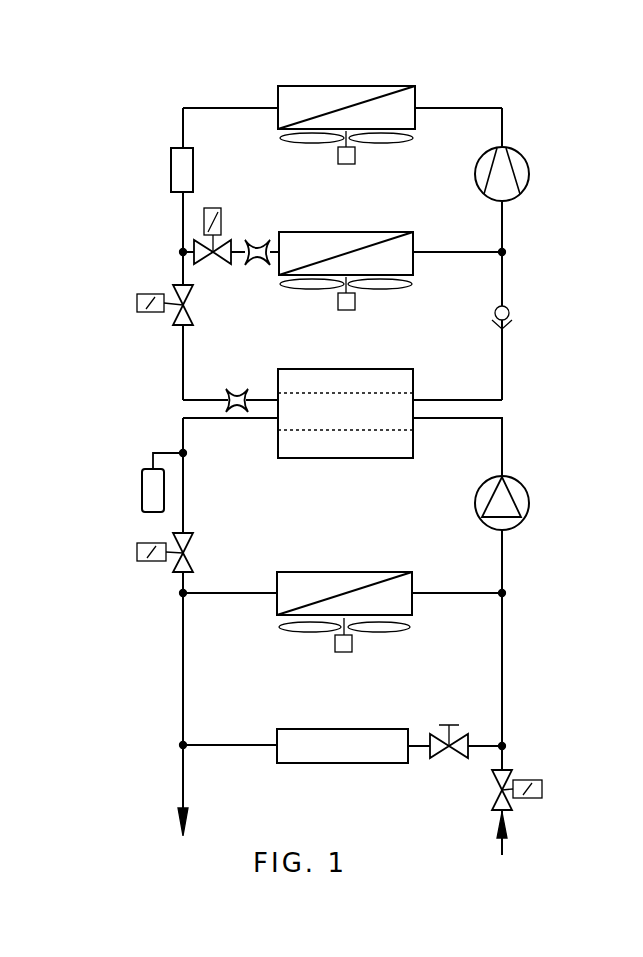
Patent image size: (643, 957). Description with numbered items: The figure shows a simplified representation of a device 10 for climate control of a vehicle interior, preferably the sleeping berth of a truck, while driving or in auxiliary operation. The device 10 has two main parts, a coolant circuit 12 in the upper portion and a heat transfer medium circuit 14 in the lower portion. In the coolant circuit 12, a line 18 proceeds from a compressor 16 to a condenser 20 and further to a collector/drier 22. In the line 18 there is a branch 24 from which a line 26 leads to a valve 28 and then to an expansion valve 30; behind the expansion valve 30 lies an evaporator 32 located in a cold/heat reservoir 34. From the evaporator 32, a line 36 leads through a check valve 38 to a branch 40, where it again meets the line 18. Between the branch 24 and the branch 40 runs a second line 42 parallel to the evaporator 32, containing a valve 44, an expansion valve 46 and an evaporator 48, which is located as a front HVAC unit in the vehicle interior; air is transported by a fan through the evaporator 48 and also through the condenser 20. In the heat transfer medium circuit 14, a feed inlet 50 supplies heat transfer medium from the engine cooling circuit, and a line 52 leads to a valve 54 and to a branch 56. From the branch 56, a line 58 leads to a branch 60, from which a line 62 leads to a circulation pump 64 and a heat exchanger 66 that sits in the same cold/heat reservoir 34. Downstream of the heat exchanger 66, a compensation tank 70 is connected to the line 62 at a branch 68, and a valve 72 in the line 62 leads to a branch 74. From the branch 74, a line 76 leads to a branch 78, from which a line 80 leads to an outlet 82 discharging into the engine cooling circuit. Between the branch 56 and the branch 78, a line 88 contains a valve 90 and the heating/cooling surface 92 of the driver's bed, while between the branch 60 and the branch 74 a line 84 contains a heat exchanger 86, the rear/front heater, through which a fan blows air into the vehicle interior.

The device 10 is at (171, 119).
The coolant circuit 12 is at (505, 234).
The heat transfer medium circuit 14 is at (503, 647).
The compressor 16 is at (522, 157).
The line 18 is at (464, 108).
The condenser 20 is at (370, 96).
The collector/drier 22 is at (178, 170).
The branch 24 is at (180, 252).
The line 26 is at (183, 362).
The valve 28 is at (162, 314).
The expansion valve 30 is at (240, 393).
The evaporator 32 is at (393, 392).
The cold/heat reservoir 34 is at (413, 384).
The line 36 is at (504, 360).
The check valve 38 is at (511, 310).
The branch 40 is at (506, 252).
The second line 42 is at (462, 254).
The valve 44 is at (196, 247).
The expansion valve 46 is at (257, 240).
The evaporator 48 is at (388, 242).
The feed inlet 50 is at (506, 837).
The line 52 is at (504, 772).
The valve 54 is at (517, 799).
The branch 56 is at (506, 748).
The line 58 is at (504, 696).
The branch 60 is at (506, 593).
The line 62 is at (504, 546).
The circulation pump 64 is at (522, 494).
The heat exchanger 66 is at (372, 432).
The branch 68 is at (179, 451).
The compensation tank 70 is at (152, 490).
The valve 72 is at (160, 563).
The branch 74 is at (180, 594).
The line 76 is at (181, 668).
The branch 78 is at (180, 745).
The line 80 is at (180, 772).
The outlet 82 is at (178, 822).
The line 84 is at (462, 596).
The heat exchanger 86 is at (305, 574).
The line 88 is at (477, 746).
The valve 90 is at (447, 761).
The heating/cooling surface 92 is at (392, 764).